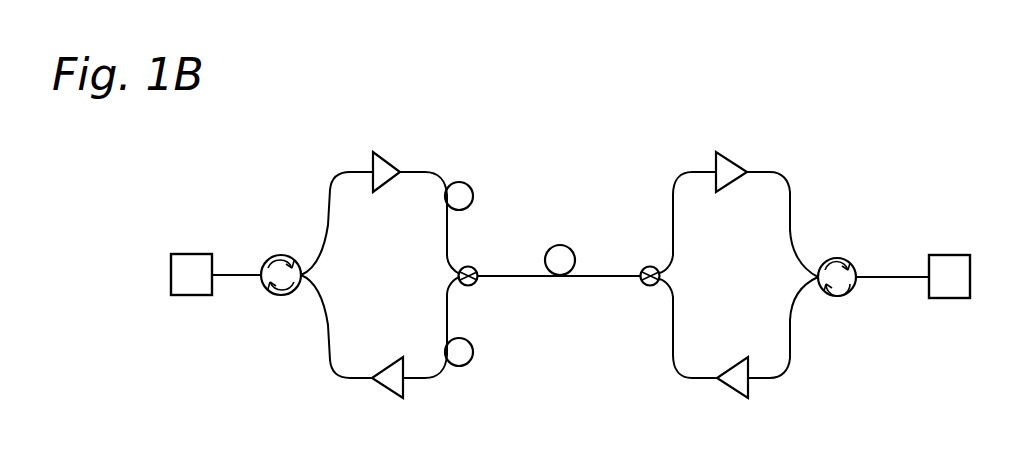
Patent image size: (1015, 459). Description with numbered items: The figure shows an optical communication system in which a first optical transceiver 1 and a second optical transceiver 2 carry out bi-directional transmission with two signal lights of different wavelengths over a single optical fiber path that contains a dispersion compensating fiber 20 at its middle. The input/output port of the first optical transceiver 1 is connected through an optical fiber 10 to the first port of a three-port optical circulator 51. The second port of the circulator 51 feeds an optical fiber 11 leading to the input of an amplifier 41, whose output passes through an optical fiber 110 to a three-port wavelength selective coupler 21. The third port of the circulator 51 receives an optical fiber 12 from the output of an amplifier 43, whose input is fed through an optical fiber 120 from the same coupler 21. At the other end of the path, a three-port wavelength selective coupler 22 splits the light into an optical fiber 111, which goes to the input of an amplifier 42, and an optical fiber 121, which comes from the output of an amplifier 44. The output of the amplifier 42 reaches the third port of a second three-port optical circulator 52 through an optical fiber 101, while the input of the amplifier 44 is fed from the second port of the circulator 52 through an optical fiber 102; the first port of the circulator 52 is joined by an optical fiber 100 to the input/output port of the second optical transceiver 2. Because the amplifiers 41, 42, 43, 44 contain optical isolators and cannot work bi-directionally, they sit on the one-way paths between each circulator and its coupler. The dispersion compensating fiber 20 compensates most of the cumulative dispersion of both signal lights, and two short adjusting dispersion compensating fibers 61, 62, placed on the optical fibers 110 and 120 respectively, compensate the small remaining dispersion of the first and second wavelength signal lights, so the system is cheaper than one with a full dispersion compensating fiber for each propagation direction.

The first optical transceiver 1 is at (188, 254).
The second optical transceiver 2 is at (947, 254).
The optical fiber 10 is at (232, 276).
The optical fiber 100 is at (893, 278).
The optical fiber 11 is at (336, 181).
The optical fiber 12 is at (333, 363).
The optical fiber 101 is at (786, 188).
The optical fiber 102 is at (787, 366).
The optical fiber 110 is at (437, 185).
The optical fiber 120 is at (437, 368).
The optical fiber 111 is at (684, 178).
The optical fiber 121 is at (684, 368).
The dispersion compensating fiber 20 is at (559, 245).
The 3-port wavelength selective coupler 21 is at (459, 276).
The 3-port wavelength selective coupler 22 is at (660, 277).
The amplifier 41 is at (388, 158).
The amplifier 42 is at (730, 158).
The amplifier 43 is at (395, 394).
The amplifier 44 is at (736, 396).
The 3-port optical circulator 51 is at (278, 296).
The 3-port optical circulator 52 is at (834, 297).
The adjusting dispersion compensating fiber 61 is at (474, 196).
The adjusting dispersion compensating fiber 62 is at (474, 352).